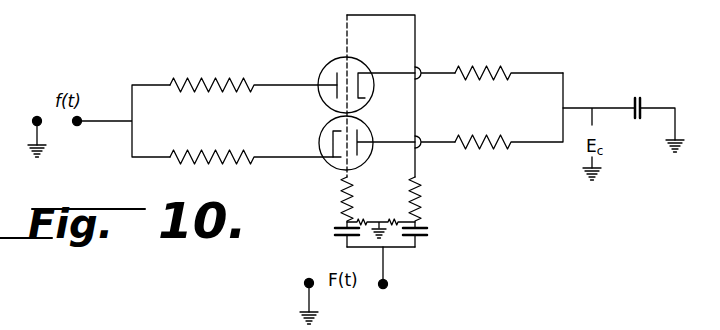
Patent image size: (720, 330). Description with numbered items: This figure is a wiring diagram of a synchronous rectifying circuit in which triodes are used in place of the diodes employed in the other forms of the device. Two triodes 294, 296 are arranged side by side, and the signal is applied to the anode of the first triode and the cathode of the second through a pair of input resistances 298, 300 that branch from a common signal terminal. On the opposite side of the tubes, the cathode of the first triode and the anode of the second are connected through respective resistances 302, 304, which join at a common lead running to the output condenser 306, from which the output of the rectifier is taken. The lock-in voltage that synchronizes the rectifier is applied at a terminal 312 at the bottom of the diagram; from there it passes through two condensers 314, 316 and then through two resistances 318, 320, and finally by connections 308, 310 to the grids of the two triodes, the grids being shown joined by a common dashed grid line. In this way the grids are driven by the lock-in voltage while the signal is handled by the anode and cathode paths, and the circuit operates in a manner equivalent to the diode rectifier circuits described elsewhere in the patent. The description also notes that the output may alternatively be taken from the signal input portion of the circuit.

The triode 294 is at (321, 70).
The triode 296 is at (337, 166).
The resistance 298 is at (215, 78).
The resistance 300 is at (222, 163).
The resistance 302 is at (489, 67).
The resistance 304 is at (488, 137).
The output condenser 306 is at (642, 101).
The connection 308 is at (349, 176).
The connection 310 is at (417, 165).
The terminal 312 is at (387, 286).
The condenser 314 is at (338, 238).
The condenser 316 is at (425, 238).
The resistance 318 is at (343, 200).
The resistance 320 is at (420, 197).